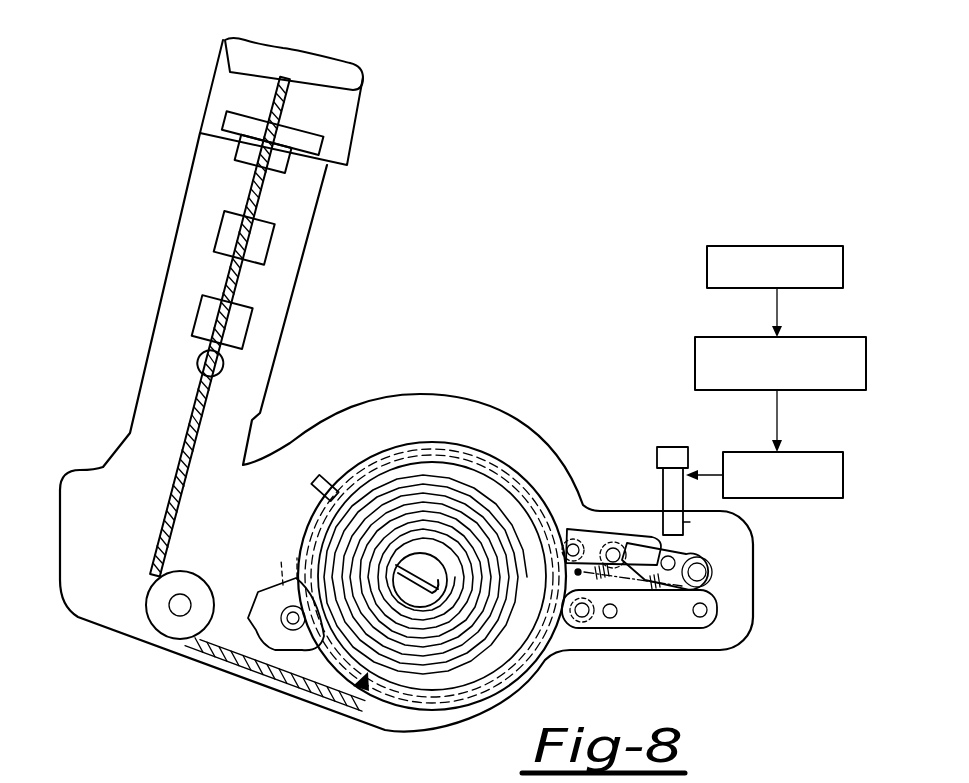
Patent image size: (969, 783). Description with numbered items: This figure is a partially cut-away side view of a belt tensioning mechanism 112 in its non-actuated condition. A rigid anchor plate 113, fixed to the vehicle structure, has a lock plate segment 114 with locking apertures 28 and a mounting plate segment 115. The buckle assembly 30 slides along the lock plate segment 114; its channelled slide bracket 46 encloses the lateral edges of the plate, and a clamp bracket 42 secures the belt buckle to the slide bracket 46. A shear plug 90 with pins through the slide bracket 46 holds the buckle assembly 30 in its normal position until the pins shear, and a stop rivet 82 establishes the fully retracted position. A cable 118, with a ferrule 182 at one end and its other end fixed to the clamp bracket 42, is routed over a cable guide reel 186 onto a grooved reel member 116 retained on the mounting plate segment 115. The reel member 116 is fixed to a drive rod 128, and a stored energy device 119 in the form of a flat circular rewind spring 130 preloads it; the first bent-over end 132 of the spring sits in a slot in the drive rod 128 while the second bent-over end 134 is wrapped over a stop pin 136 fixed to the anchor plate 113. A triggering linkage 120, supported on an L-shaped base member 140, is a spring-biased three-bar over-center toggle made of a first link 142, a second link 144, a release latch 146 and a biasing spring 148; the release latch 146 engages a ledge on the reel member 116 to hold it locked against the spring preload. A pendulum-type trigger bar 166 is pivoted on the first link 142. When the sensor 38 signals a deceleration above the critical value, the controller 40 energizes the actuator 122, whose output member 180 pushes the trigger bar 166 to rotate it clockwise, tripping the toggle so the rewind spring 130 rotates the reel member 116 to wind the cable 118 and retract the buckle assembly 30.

The locking apertures 28 is at (278, 232).
The buckle assembly 30 is at (375, 110).
The sensor 38 is at (766, 235).
The controller 40 is at (704, 330).
The clamp bracket 42 is at (247, 52).
The slide bracket 46 is at (225, 88).
The stop rivet 82 is at (222, 366).
The shear plug 90 is at (322, 148).
The belt tensioning mechanism 112 is at (463, 481).
The anchor plate 113 is at (385, 393).
The lock plate segment 114 is at (282, 275).
The mounting plate segment 115 is at (650, 632).
The reel member 116 is at (448, 472).
The cable 118 is at (203, 650).
The stored energy device 119 is at (360, 688).
The triggering linkage 120 is at (736, 596).
The actuator 122 is at (805, 500).
The drive rod 128 is at (440, 560).
The rewind spring 130 is at (440, 682).
The first bent-over end 132 is at (440, 588).
The second bent-over end 134 is at (267, 647).
The stop pin 136 is at (293, 632).
The base member 140 is at (610, 625).
The first link 142 is at (618, 545).
The second link 144 is at (583, 540).
The release latch 146 is at (576, 626).
The biasing spring 148 is at (650, 590).
The trigger bar 166 is at (690, 522).
The actuator output member 180 is at (714, 470).
The ferrule 182 is at (312, 491).
The cable guide reel 186 is at (157, 618).